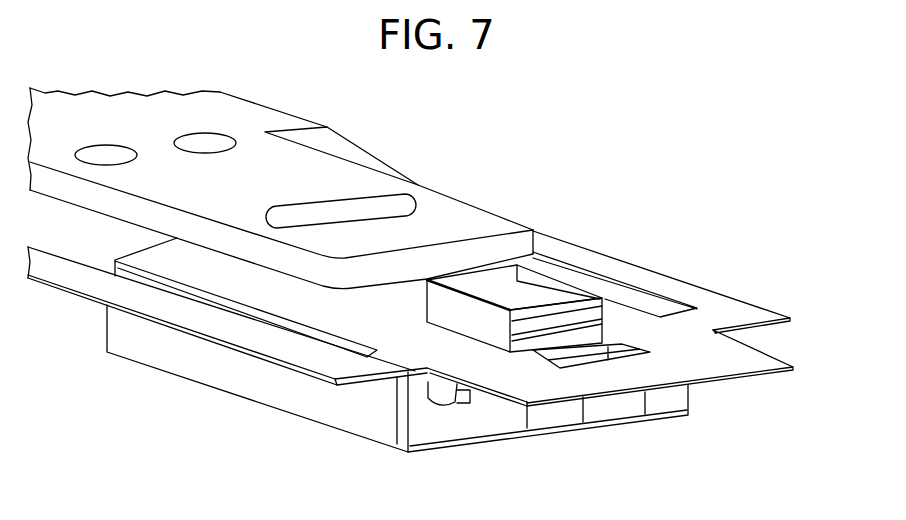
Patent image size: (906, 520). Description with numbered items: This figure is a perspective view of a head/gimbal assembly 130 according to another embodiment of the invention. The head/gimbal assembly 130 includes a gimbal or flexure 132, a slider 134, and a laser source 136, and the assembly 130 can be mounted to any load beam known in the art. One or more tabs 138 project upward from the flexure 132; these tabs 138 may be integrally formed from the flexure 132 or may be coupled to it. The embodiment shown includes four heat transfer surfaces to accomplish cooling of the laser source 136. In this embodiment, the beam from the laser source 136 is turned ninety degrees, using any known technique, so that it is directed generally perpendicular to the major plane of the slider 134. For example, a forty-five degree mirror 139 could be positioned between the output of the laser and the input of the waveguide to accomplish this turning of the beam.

The head/gimbal assembly 130 is at (474, 121).
The gimbal or flexure 132 is at (598, 260).
The slider 134 is at (274, 396).
The laser source 136 is at (527, 296).
The tabs 138 is at (460, 318).
The forty-five degree mirror 139 is at (600, 322).